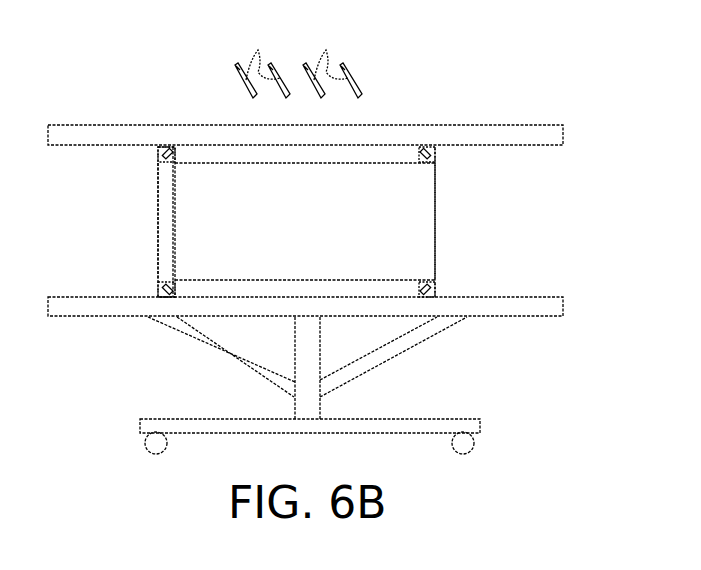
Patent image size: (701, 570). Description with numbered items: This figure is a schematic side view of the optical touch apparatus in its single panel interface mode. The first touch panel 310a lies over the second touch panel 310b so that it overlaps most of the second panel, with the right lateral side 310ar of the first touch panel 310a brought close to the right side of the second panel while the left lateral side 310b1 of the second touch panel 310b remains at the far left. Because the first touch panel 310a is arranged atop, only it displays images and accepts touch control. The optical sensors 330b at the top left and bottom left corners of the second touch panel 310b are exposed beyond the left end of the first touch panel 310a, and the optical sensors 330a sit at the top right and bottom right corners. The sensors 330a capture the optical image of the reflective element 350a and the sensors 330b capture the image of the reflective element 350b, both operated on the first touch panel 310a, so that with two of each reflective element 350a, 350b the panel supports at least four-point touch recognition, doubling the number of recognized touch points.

The first touch panel 310a is at (418, 192).
The right lateral side of the first touch panel 310ar is at (437, 228).
The second touch panel 310b is at (168, 193).
The left lateral side of the second touch panel 310b1 is at (158, 228).
The optical sensor 330a is at (433, 160).
The optical sensor 330b is at (160, 160).
The reflective element 350a is at (262, 60).
The reflective element 350b is at (332, 60).